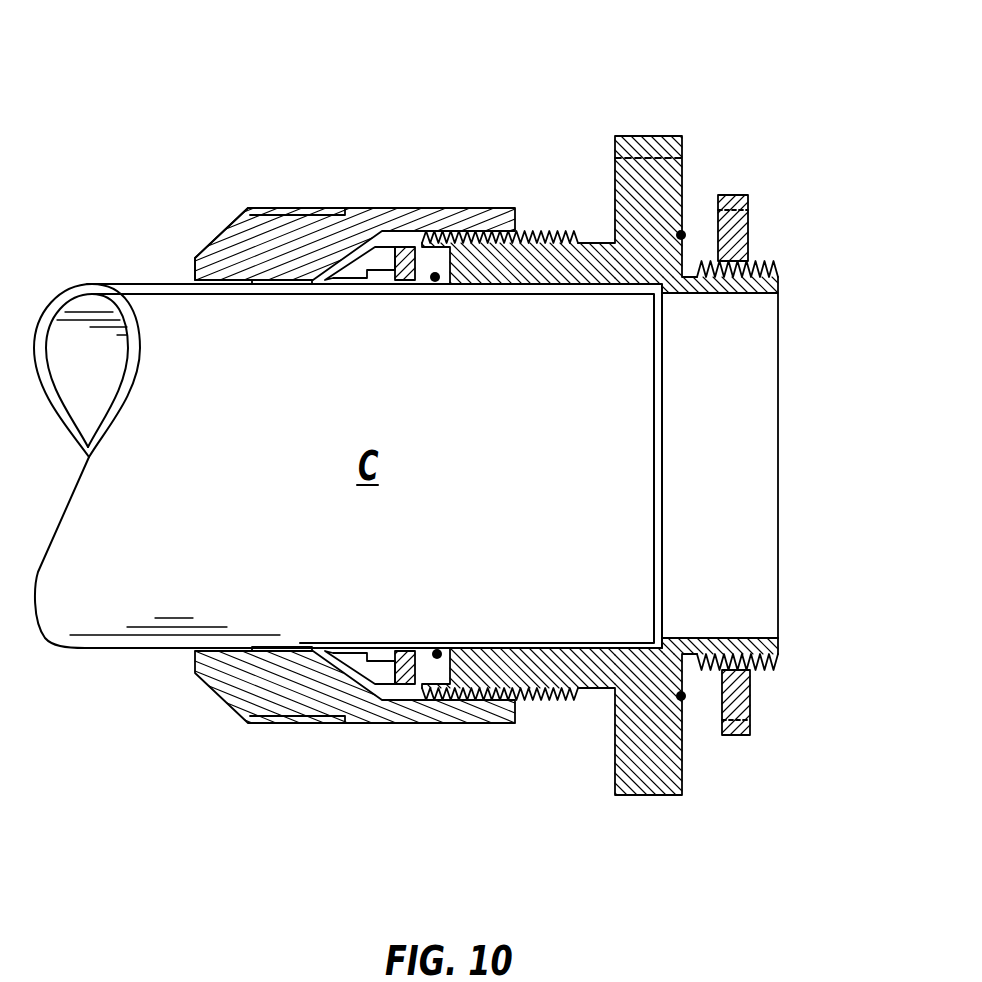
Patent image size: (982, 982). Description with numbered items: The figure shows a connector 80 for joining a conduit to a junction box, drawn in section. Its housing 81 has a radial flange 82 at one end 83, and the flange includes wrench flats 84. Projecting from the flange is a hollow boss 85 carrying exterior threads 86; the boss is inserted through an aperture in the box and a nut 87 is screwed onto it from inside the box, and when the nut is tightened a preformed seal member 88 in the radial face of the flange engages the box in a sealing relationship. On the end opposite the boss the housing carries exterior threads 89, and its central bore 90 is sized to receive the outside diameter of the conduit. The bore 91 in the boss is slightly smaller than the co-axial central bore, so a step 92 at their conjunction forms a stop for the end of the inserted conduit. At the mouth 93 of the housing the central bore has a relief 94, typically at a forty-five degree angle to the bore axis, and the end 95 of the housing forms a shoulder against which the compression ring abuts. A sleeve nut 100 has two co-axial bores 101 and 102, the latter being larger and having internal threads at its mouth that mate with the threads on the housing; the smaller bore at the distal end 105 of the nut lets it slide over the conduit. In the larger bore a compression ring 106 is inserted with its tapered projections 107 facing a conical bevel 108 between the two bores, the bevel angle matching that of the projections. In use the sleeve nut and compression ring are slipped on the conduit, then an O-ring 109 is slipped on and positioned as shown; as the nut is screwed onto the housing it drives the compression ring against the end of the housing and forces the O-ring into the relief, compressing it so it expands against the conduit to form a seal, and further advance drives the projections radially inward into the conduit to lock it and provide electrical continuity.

The connector 80 is at (243, 68).
The housing 81 is at (600, 235).
The radial flange 82 is at (683, 172).
The end 83 is at (701, 305).
The wrench flats 84 is at (637, 140).
The hollow boss 85 is at (768, 263).
The exterior threads 86 is at (770, 662).
The nut 87 is at (737, 735).
The preformed seal member 88 is at (684, 233).
The exterior threads 89 is at (527, 693).
The central bore 90 is at (563, 272).
The bore 91 is at (752, 635).
The step 92 is at (658, 640).
The mouth 93 is at (433, 699).
The relief 94 is at (452, 280).
The end 95 is at (432, 255).
The sleeve nut 100 is at (209, 228).
The bore 101 is at (255, 285).
The bore 102 is at (407, 641).
The distal end 105 is at (196, 270).
The compression ring 106 is at (438, 649).
The tapered projections 107 is at (367, 672).
The conical bevel 108 is at (345, 249).
The O-ring 109 is at (435, 282).